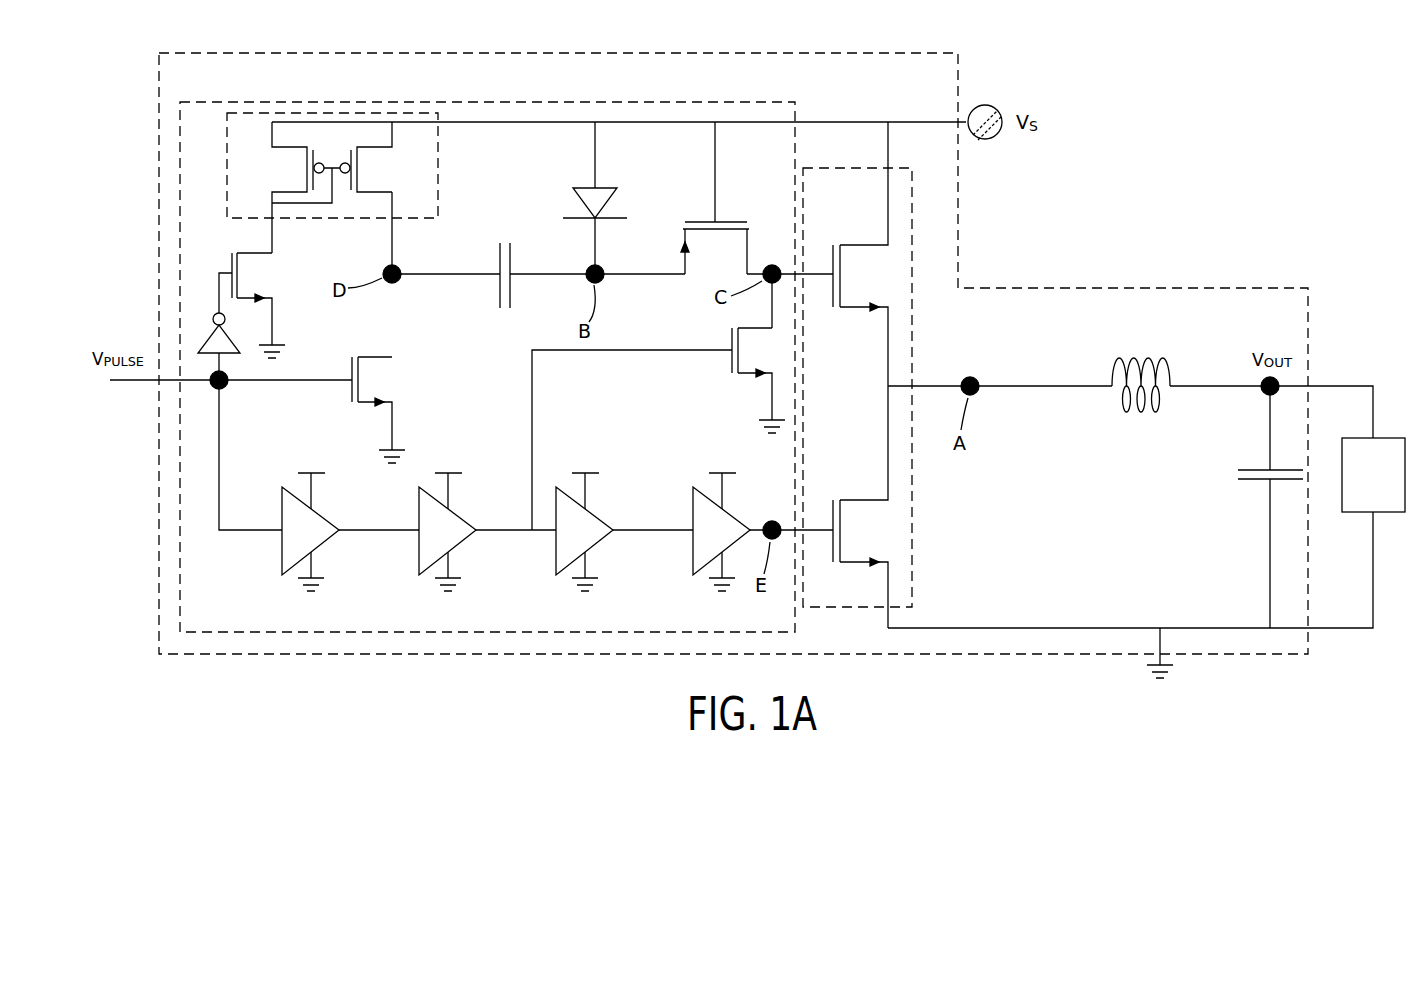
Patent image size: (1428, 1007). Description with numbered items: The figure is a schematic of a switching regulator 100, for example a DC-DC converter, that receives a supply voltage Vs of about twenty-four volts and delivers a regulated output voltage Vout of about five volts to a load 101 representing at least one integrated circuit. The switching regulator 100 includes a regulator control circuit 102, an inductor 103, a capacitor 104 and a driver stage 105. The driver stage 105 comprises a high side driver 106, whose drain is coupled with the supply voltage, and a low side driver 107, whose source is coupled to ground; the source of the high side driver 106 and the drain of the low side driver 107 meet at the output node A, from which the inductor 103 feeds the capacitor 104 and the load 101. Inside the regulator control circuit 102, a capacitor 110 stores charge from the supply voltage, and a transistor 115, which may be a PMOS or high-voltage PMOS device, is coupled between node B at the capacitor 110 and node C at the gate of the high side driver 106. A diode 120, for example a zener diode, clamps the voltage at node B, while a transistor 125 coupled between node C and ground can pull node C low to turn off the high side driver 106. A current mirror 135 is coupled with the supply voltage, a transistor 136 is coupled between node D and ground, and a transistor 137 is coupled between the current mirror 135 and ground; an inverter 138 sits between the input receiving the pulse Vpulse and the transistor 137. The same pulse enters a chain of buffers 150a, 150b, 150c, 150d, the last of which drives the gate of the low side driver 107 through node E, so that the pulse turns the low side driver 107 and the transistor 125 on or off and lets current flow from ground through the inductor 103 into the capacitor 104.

The switching regulator 100 is at (958, 66).
The load 101 is at (1386, 438).
The regulator control circuit 102 is at (796, 111).
The inductor 103 is at (1180, 377).
The capacitor 104 is at (1241, 488).
The driver stage 105 is at (913, 331).
The high side driver 106 is at (859, 242).
The low side driver 107 is at (857, 491).
The capacitor 110 is at (492, 249).
The transistor 115 is at (754, 262).
The diode 120 is at (565, 202).
The transistor 125 is at (722, 366).
The current mirror 135 is at (440, 159).
The transistor 136 is at (407, 374).
The transistor 137 is at (229, 257).
The inverter 138 is at (246, 363).
The buffer 150a is at (322, 507).
The buffer 150b is at (459, 507).
The buffer 150c is at (596, 507).
The buffer 150d is at (733, 507).